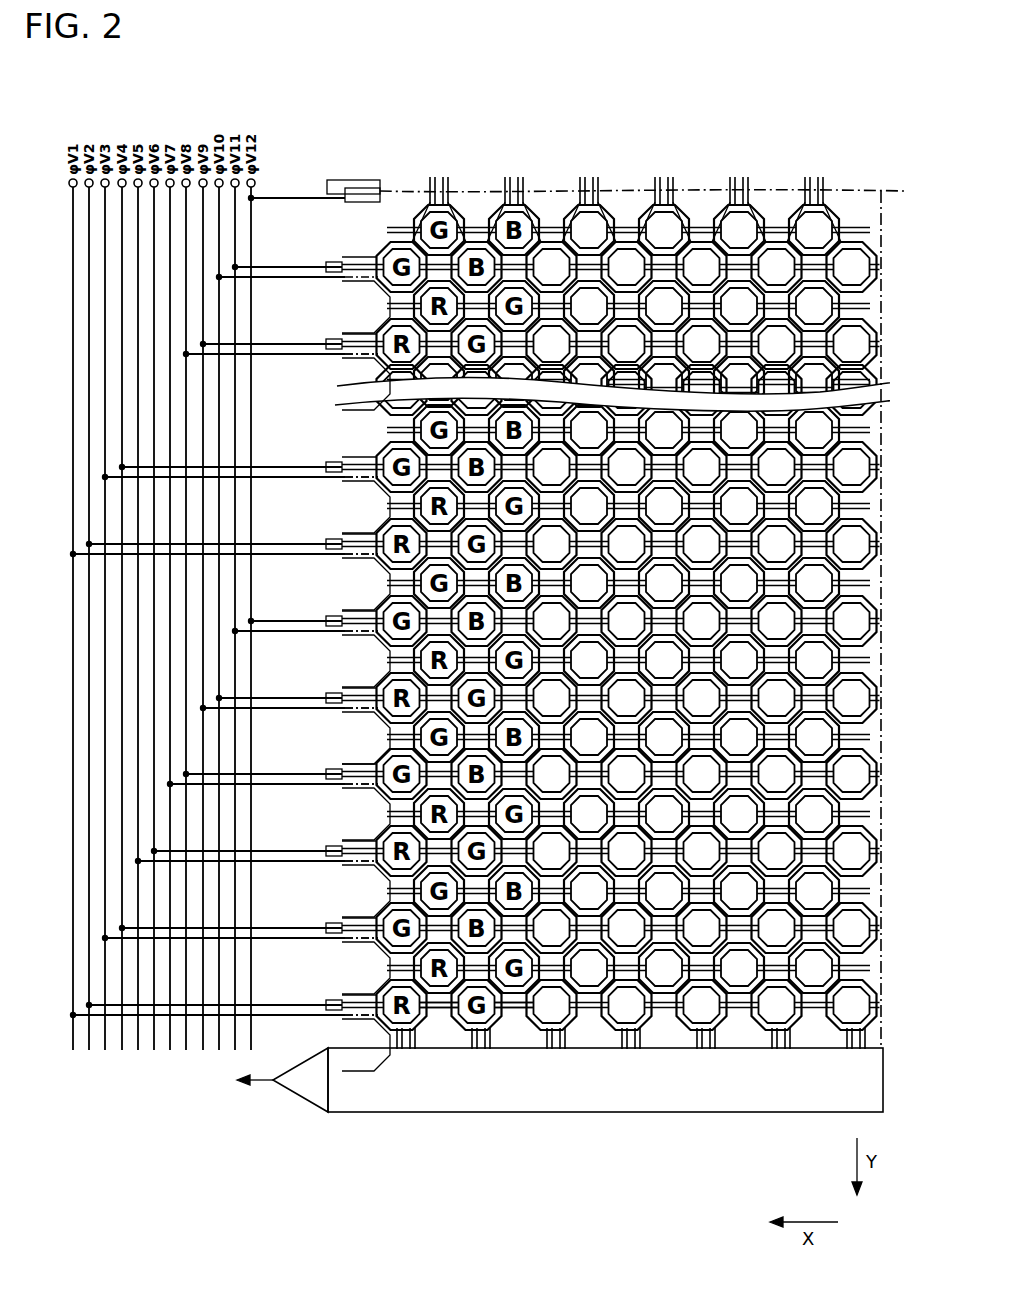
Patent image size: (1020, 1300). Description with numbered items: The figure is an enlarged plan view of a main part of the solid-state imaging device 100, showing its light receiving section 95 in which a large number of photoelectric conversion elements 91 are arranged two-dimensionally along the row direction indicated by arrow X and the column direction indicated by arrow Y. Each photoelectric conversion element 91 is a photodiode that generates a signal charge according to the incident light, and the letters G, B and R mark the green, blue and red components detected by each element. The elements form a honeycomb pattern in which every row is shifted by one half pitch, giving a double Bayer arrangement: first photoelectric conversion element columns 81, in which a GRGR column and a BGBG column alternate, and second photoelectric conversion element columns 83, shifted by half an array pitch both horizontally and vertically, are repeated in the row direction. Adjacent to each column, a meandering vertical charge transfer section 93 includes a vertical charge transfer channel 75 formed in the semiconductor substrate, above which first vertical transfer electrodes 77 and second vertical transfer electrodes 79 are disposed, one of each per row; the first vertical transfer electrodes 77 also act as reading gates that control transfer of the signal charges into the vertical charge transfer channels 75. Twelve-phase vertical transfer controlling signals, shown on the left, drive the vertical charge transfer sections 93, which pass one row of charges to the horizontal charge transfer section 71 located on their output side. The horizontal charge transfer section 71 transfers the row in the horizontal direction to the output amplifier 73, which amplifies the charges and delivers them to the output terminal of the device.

The horizontal charge transfer section 71 is at (705, 1104).
The output amplifier 73 is at (305, 1088).
The vertical charge transfer channel 75 is at (509, 178).
The first vertical transfer electrode 77 is at (348, 360).
The second vertical transfer electrode 79 is at (330, 324).
The first photoelectric conversion element column 81 is at (478, 1058).
The second photoelectric conversion element column 83 is at (510, 1014).
The photoelectric conversion element 91 is at (432, 328).
The vertical charge transfer section 93 is at (420, 182).
The light receiving section 95 is at (813, 172).
The solid-state imaging device 100 is at (742, 172).